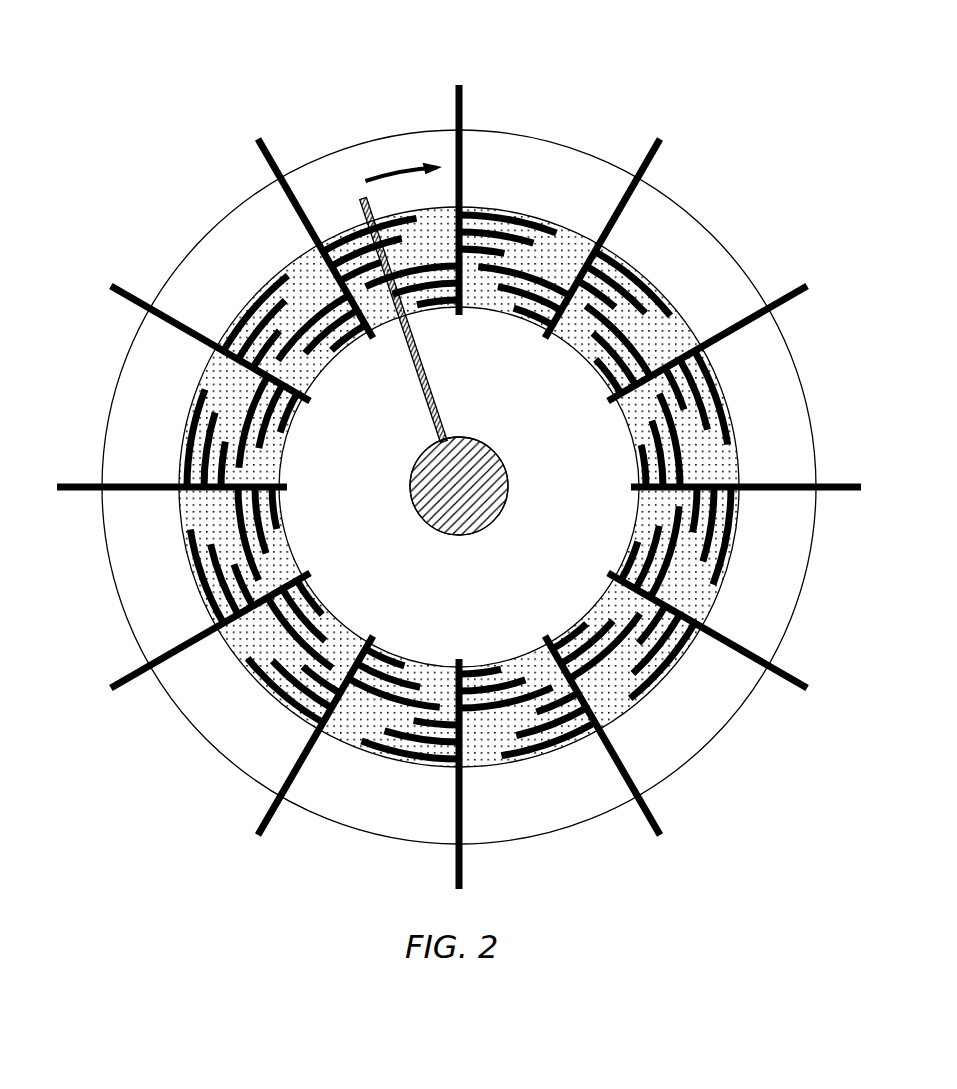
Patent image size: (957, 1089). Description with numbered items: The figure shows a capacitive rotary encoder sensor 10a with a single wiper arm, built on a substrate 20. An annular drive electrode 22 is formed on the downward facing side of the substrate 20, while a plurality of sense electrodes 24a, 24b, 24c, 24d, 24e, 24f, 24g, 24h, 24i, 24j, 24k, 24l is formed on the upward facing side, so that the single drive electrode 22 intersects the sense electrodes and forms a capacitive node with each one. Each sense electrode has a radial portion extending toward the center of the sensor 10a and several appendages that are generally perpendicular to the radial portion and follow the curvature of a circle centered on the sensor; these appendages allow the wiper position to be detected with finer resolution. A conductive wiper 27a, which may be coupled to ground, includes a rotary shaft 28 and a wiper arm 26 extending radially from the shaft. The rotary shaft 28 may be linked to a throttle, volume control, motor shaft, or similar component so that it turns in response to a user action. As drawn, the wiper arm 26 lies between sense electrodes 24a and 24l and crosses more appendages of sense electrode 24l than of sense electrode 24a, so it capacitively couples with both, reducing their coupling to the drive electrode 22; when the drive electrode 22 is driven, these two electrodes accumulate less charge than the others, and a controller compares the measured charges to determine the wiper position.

The capacitive rotary encoder sensor 10a is at (226, 53).
The substrate 20 is at (196, 246).
The drive electrode 22 is at (189, 398).
The sense electrode 24a is at (462, 100).
The sense electrode 24b is at (662, 149).
The sense electrode 24c is at (798, 295).
The sense electrode 24d is at (860, 483).
The sense electrode 24e is at (792, 678).
The sense electrode 24f is at (662, 833).
The sense electrode 24g is at (462, 888).
The sense electrode 24h is at (258, 834).
The sense electrode 24i is at (112, 685).
The sense electrode 24j is at (58, 484).
The sense electrode 24k is at (110, 297).
The sense electrode 24l is at (256, 155).
The wiper arm 26 is at (431, 394).
The wiper 27a is at (495, 455).
The rotary shaft 28 is at (411, 488).